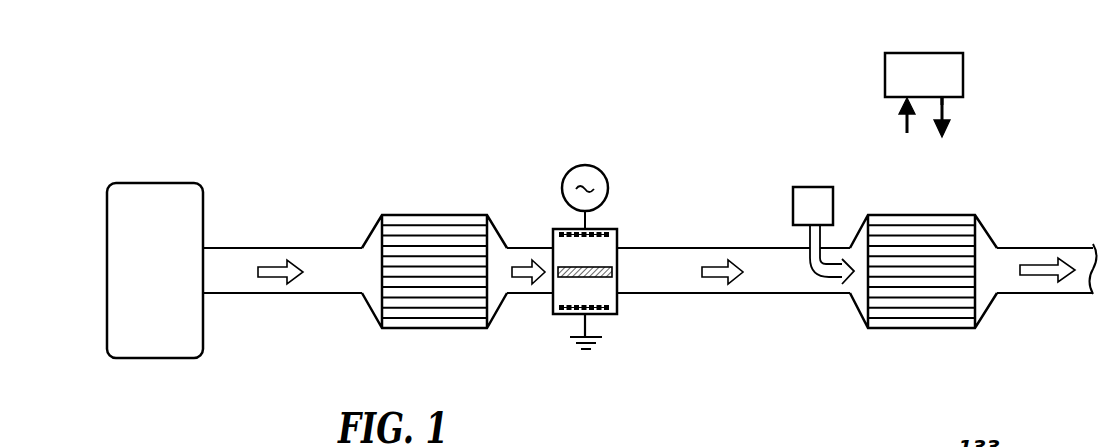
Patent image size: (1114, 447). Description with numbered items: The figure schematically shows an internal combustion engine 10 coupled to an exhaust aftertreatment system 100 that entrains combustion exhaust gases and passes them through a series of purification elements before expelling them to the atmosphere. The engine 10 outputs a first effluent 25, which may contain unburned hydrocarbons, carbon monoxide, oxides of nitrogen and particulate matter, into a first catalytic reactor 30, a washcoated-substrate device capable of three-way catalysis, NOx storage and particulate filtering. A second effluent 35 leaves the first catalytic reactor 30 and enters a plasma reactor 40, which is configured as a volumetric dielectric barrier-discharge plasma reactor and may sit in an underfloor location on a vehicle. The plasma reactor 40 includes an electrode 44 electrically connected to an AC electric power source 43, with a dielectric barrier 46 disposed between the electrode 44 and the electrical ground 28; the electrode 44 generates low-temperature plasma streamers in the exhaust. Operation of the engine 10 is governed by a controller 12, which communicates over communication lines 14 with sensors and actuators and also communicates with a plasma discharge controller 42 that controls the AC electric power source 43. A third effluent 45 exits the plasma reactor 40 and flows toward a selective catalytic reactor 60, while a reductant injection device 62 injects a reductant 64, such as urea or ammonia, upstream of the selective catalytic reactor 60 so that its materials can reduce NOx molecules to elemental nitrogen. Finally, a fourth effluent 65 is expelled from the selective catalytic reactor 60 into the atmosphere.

The exhaust aftertreatment system 100 is at (713, 148).
The internal combustion engine 10 is at (162, 197).
The first effluent 25 is at (272, 278).
The first catalytic reactor 30 is at (435, 230).
The second effluent 35 is at (522, 278).
The plasma reactor 40 is at (556, 228).
The plasma discharge controller 42 is at (573, 166).
The AC electric power source 43 is at (549, 168).
The electrode 44 is at (600, 265).
The dielectric barrier 46 is at (614, 310).
The electrical ground 28 is at (587, 351).
The third effluent 45 is at (722, 278).
The reductant injection device 62 is at (815, 187).
The reductant 64 is at (834, 282).
The selective catalytic reactor 60 is at (925, 230).
The fourth effluent 65 is at (1040, 278).
The controller 12 is at (924, 95).
The communication lines 14 is at (946, 106).